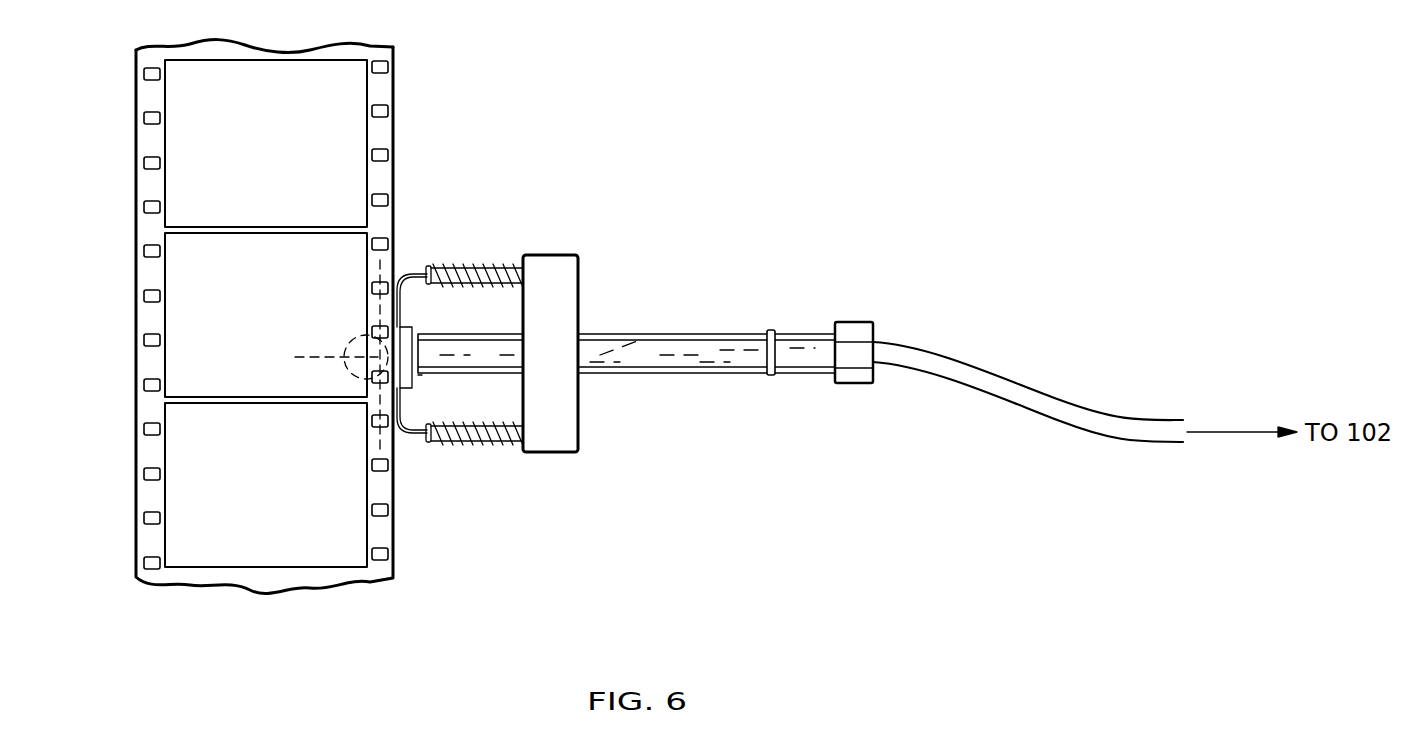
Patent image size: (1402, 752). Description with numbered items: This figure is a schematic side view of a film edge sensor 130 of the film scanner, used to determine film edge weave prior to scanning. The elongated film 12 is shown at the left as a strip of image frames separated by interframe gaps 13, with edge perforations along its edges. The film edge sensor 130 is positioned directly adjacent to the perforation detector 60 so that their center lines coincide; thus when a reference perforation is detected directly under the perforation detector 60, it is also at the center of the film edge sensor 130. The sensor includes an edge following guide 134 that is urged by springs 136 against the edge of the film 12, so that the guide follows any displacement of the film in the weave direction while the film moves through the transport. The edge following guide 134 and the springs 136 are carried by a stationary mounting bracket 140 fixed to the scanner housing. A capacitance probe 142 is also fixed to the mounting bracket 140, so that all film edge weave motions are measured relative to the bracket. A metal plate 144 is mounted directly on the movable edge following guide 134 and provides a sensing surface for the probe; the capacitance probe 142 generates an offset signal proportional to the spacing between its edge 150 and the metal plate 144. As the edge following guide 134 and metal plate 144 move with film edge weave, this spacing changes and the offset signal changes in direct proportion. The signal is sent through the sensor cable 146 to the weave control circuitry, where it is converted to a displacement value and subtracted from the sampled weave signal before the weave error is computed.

The elongated film 12 is at (360, 178).
The interframe gap 13 is at (320, 357).
The perforation detector 60 is at (360, 357).
The film edge sensor 130 is at (738, 547).
The edge following guide 134 is at (398, 277).
The springs 136 is at (475, 265).
The stationary mounting bracket 140 is at (550, 454).
The capacitance probe 142 is at (638, 343).
The metal plate 144 is at (413, 442).
The sensor cable 146 is at (960, 358).
The edge of the capacitance probe 150 is at (420, 374).